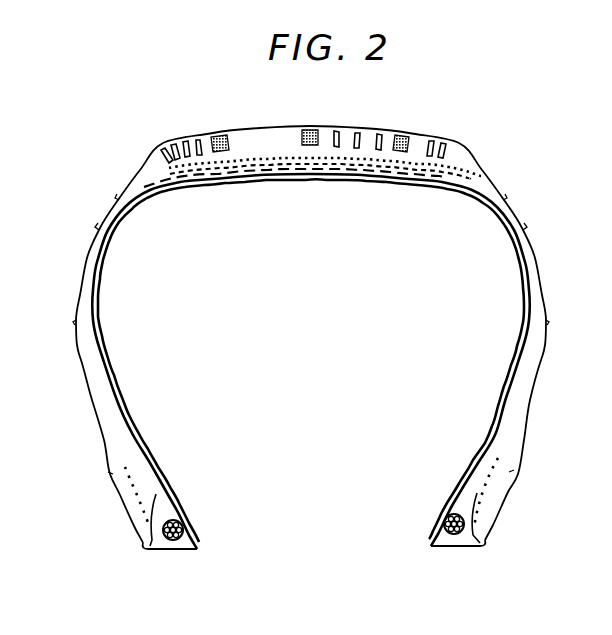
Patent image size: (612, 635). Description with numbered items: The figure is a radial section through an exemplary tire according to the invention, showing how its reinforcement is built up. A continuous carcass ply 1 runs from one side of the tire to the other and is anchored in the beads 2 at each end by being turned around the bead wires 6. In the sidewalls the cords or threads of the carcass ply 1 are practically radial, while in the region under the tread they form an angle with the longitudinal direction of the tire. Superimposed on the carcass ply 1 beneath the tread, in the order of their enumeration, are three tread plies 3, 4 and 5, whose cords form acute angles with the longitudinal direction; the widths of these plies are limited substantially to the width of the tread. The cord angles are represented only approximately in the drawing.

The carcass ply 1 is at (113, 396).
The beads 2 is at (128, 492).
The tread ply 3 is at (443, 178).
The tread ply 4 is at (474, 178).
The tread ply 5 is at (452, 165).
The bead wires 6 is at (183, 527).